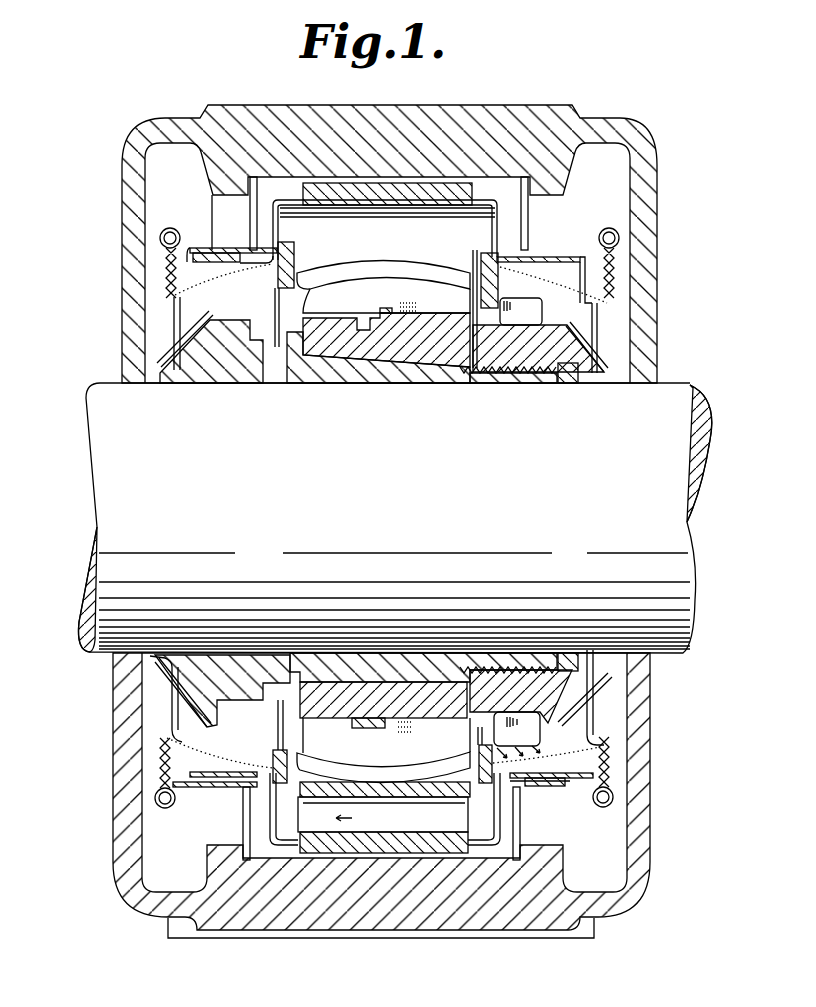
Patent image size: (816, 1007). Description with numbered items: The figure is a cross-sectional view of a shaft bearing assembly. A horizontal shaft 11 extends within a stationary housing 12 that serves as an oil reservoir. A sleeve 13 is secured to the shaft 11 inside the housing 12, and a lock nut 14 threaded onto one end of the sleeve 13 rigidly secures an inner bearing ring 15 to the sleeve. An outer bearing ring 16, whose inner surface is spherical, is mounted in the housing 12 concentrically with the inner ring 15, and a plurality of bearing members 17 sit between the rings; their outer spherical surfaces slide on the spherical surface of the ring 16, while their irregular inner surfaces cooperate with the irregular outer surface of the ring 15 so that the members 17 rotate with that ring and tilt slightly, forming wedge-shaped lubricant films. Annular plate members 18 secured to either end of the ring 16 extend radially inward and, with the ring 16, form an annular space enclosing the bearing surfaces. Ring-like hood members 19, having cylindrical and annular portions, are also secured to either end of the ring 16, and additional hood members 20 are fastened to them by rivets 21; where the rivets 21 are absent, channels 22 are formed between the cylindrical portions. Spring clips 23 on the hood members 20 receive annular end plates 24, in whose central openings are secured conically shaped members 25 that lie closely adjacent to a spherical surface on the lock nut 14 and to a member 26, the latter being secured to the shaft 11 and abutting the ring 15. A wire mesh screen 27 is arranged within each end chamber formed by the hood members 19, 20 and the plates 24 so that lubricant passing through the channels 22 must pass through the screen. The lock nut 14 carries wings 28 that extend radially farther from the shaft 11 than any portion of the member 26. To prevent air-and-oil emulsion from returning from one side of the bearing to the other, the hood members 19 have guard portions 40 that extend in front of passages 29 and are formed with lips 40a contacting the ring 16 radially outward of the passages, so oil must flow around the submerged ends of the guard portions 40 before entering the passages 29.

The horizontal shaft 11 is at (97, 444).
The housing 12 is at (124, 311).
The sleeve 13 is at (347, 378).
The lock nut 14 is at (520, 355).
The inner bearing ring 15 is at (423, 364).
The outer bearing ring 16 is at (407, 201).
The bearing members 17 is at (345, 270).
The annular plate members 18 is at (282, 260).
The hood members 19 is at (287, 833).
The hood members 20 is at (192, 248).
The rivets 21 is at (228, 252).
The channels 22 is at (565, 257).
The spring clips 23 is at (180, 220).
The annular end plates 24 is at (172, 712).
The conically shaped members 25 is at (207, 316).
The member 26 is at (228, 381).
The wire mesh screen 27 is at (252, 278).
The wings 28 is at (553, 740).
The passages 29 is at (364, 820).
The guard portions 40 is at (490, 816).
The lips 40a is at (494, 853).